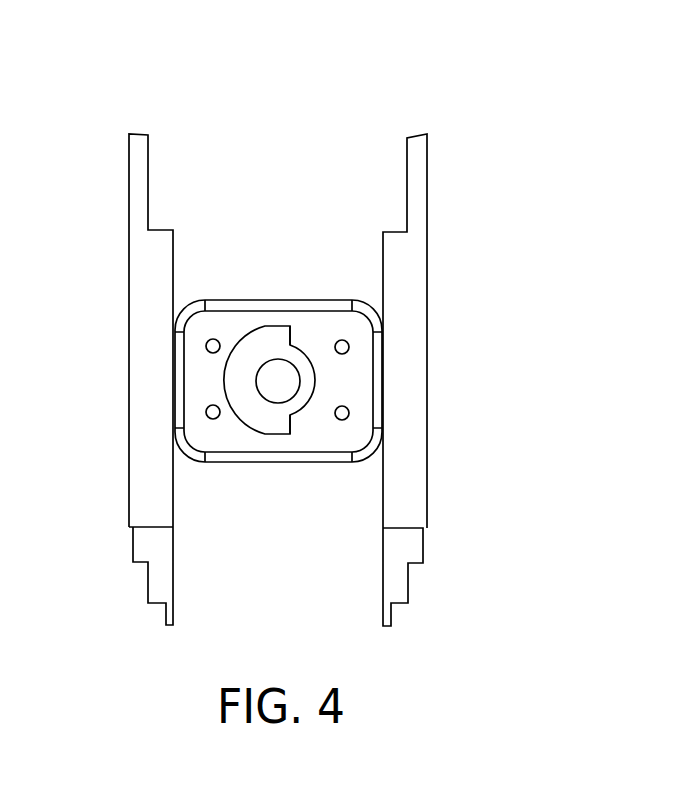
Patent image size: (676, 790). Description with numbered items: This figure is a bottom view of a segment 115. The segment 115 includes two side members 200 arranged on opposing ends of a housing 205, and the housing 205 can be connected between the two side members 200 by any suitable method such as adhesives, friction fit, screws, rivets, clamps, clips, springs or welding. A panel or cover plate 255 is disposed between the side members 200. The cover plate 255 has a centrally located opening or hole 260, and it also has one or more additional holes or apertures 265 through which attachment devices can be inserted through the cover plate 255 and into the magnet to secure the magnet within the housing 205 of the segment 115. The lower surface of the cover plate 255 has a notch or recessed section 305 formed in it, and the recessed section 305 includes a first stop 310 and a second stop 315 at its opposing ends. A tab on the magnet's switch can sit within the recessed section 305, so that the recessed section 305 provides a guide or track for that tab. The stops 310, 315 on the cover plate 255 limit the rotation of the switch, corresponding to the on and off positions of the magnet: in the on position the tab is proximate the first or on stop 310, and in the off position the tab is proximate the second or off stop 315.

The segment 115 is at (335, 114).
The side members 200 is at (154, 333).
The housing 205 is at (230, 300).
The cover plate 255 is at (222, 437).
The centrally located opening 260 is at (279, 380).
The apertures 265 is at (206, 413).
The recessed section 305 is at (238, 382).
The first stop 310 is at (292, 336).
The second stop 315 is at (292, 423).